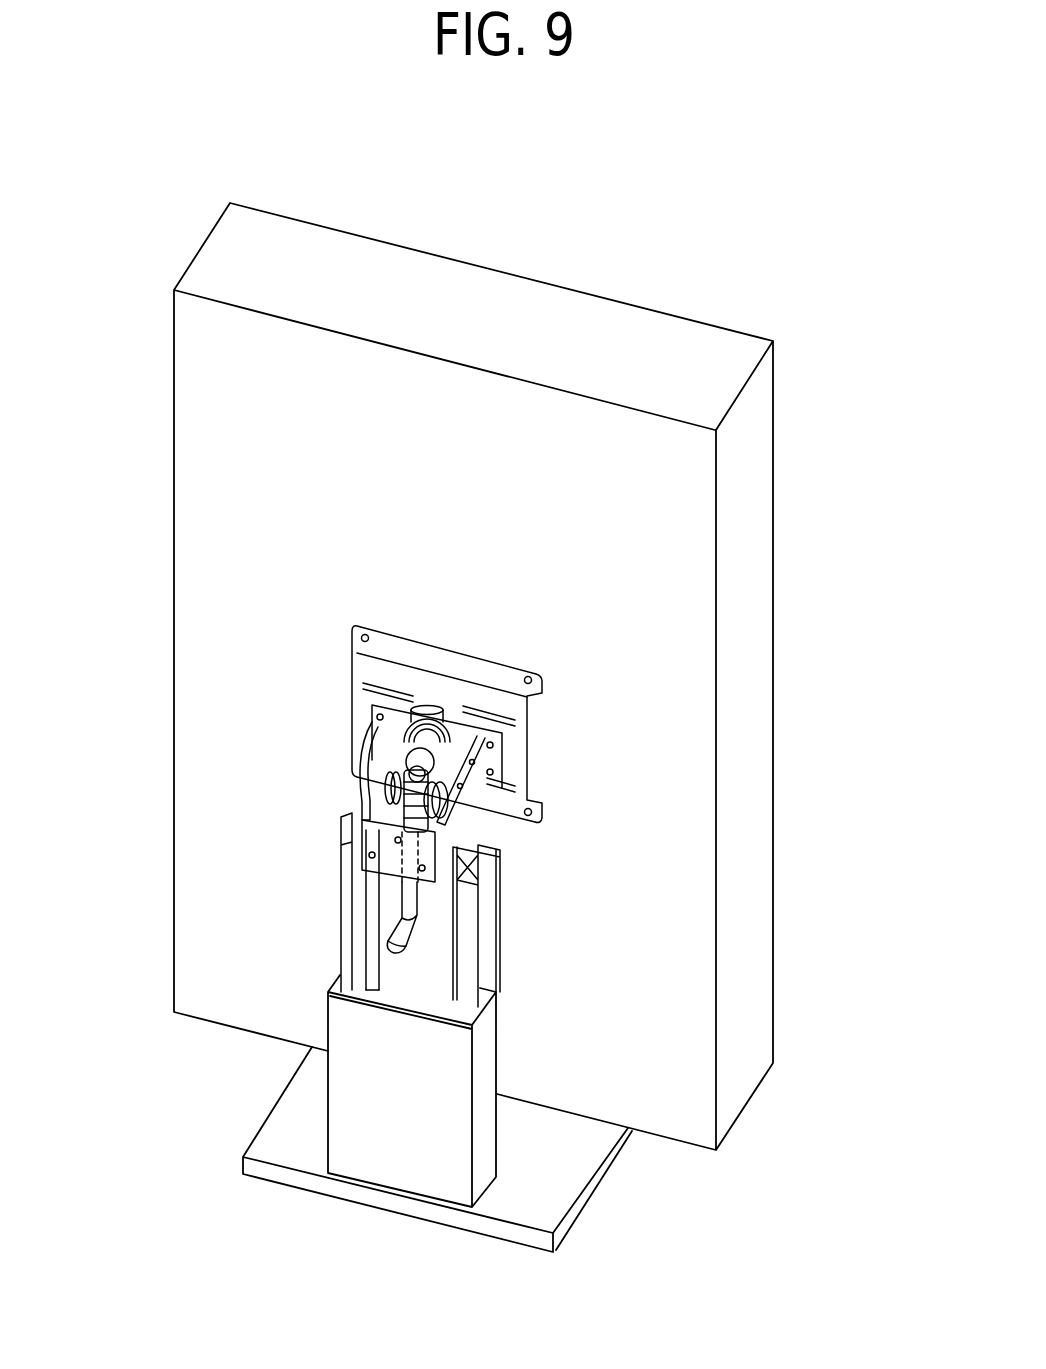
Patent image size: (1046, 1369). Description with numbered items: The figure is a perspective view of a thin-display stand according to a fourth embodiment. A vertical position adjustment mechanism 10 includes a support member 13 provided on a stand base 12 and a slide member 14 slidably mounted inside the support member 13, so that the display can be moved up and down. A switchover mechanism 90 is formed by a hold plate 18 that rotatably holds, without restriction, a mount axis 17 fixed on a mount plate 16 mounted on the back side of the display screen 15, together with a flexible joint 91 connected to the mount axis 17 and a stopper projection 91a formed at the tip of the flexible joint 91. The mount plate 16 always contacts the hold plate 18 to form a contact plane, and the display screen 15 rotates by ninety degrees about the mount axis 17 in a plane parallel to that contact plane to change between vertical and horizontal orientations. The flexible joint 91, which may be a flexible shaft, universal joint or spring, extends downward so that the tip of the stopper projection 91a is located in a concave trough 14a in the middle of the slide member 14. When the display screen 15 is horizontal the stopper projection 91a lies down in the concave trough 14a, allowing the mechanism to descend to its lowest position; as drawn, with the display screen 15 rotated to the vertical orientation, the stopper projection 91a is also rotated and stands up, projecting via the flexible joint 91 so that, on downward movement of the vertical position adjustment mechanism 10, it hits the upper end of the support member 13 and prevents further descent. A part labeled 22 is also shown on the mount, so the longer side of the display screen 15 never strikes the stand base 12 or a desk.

The vertical position adjustment mechanism 10 is at (316, 1018).
The stand base 12 is at (562, 1178).
The support member 13 is at (395, 1167).
The slide member 14 is at (355, 945).
The concave trough 14a is at (407, 973).
The display screen 15 is at (495, 318).
The mount plate 16 is at (527, 744).
The mount axis 17 is at (505, 778).
The hold plate 18 is at (456, 724).
The shaft 22 is at (430, 706).
The switchover mechanism 90 is at (312, 722).
The flexible joint 91 is at (360, 835).
The stopper projection 91a is at (405, 935).